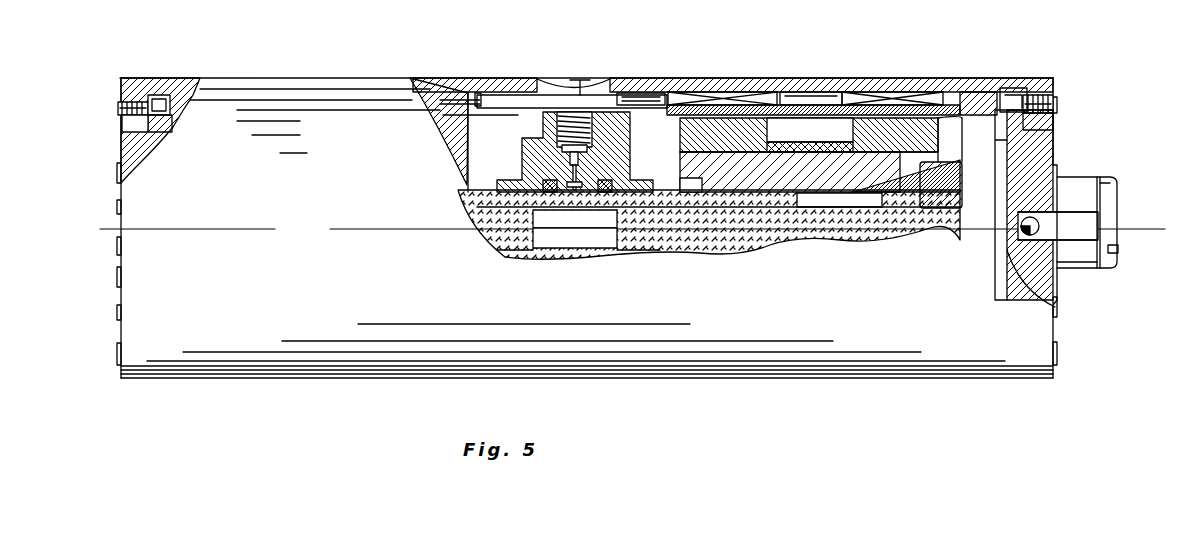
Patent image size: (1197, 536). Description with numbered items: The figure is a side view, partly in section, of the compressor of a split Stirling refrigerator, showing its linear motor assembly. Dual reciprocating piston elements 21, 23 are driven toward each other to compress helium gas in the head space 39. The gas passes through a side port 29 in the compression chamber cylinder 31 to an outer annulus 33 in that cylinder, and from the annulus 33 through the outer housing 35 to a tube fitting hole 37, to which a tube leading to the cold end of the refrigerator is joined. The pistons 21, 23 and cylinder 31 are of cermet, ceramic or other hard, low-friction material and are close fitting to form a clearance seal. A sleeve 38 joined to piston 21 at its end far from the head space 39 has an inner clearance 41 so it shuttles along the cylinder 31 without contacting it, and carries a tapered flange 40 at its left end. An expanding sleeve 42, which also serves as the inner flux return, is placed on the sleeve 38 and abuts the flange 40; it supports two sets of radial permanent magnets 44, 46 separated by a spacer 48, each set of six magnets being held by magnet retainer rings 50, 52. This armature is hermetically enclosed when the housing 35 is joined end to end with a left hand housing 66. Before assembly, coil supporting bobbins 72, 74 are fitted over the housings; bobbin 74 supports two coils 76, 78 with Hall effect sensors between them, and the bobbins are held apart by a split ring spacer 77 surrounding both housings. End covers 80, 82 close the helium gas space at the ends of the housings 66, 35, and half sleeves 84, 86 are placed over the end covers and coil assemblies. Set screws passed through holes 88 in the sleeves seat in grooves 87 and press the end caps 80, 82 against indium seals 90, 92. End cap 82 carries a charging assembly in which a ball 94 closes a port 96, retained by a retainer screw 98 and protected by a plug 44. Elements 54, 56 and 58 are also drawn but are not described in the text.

The reciprocating piston element 21 is at (620, 235).
The reciprocating piston element 23 is at (540, 242).
The side port 29 is at (587, 206).
The compression chamber cylinder 31 is at (603, 257).
The outer annulus 33 is at (562, 175).
The outer housing 35 is at (597, 100).
The tube fitting hole 37 is at (563, 118).
The sleeve 38 is at (978, 200).
The head space 39 is at (566, 243).
The tapered flange 40 is at (688, 172).
The inner clearance 41 is at (752, 240).
The expanding sleeve 42 is at (920, 160).
The radial permanent magnets 44 is at (686, 139).
The radial permanent magnets 46 is at (945, 125).
The spacer 48 is at (793, 148).
The magnet retainer ring 50 is at (684, 121).
The magnet retainer ring 52 is at (937, 130).
The wall block 54 is at (1042, 150).
The wedge 56 is at (912, 183).
The spacer 58 is at (935, 230).
The left hand housing 66 is at (512, 100).
The coil supporting bobbin 72 is at (480, 93).
The coil supporting bobbin 74 is at (650, 93).
The coil 76 is at (750, 95).
The spacer 77 is at (581, 82).
The coil 78 is at (900, 95).
The end cover 80 is at (132, 150).
The end cover 82 is at (1052, 175).
The half sleeve 84 is at (323, 357).
The half sleeve 86 is at (815, 78).
The groove 87 is at (157, 100).
The hole 88 is at (133, 100).
The indium seal 90 is at (178, 108).
The indium seal 92 is at (1013, 90).
The ball 94 is at (1057, 271).
The port 96 is at (1020, 236).
The retainer screw 98 is at (1093, 268).